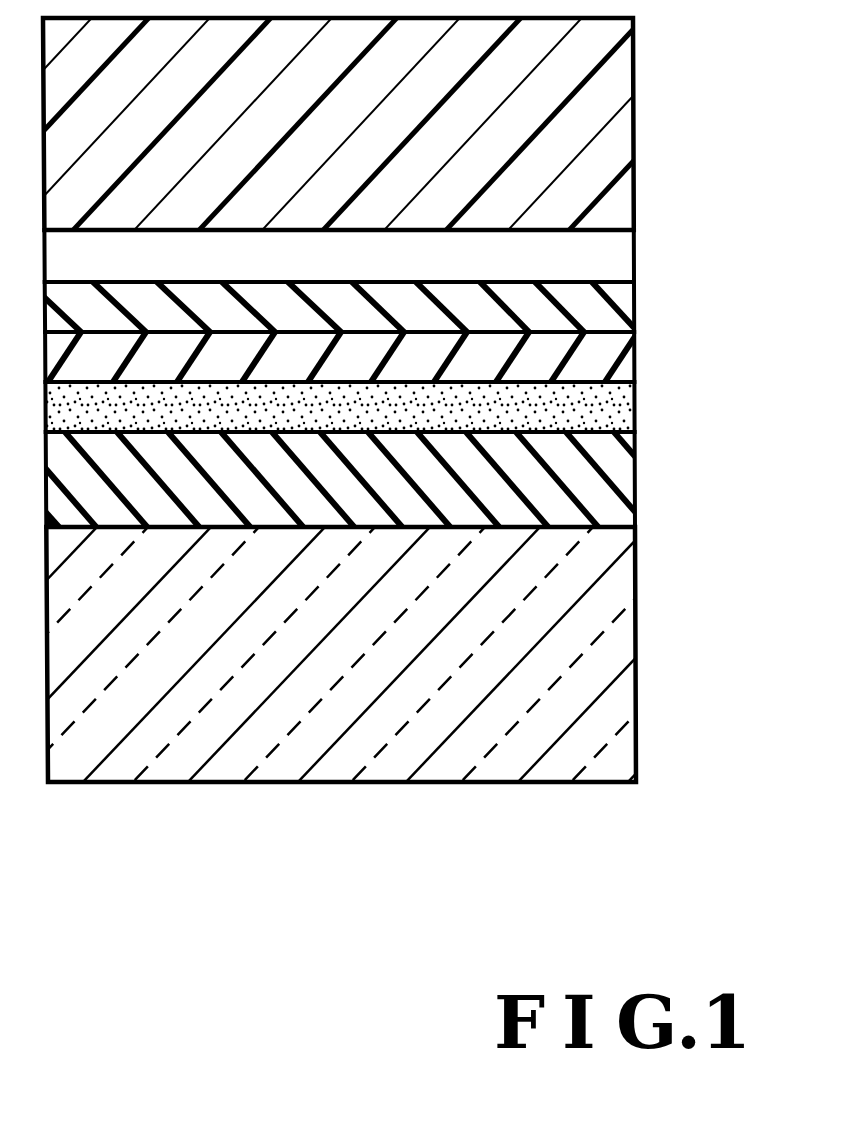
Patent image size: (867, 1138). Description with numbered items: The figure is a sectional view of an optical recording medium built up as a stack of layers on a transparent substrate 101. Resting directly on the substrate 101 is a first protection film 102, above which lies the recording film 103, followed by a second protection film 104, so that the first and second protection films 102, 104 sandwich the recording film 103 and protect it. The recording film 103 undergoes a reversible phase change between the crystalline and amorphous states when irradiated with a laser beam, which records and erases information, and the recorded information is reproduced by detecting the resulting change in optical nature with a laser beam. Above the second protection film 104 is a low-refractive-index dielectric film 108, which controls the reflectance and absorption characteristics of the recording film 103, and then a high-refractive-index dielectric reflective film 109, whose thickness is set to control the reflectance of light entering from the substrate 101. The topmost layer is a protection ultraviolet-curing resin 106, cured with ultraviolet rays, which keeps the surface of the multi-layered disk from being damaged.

The transparent substrate 101 is at (577, 638).
The first protection film 102 is at (578, 485).
The recording film 103 is at (605, 414).
The second protection film 104 is at (592, 362).
The protection ultraviolet-curing resin 106 is at (585, 123).
The low-refractive-index dielectric film 108 is at (587, 307).
The high-refractive-index dielectric reflective film 109 is at (583, 255).